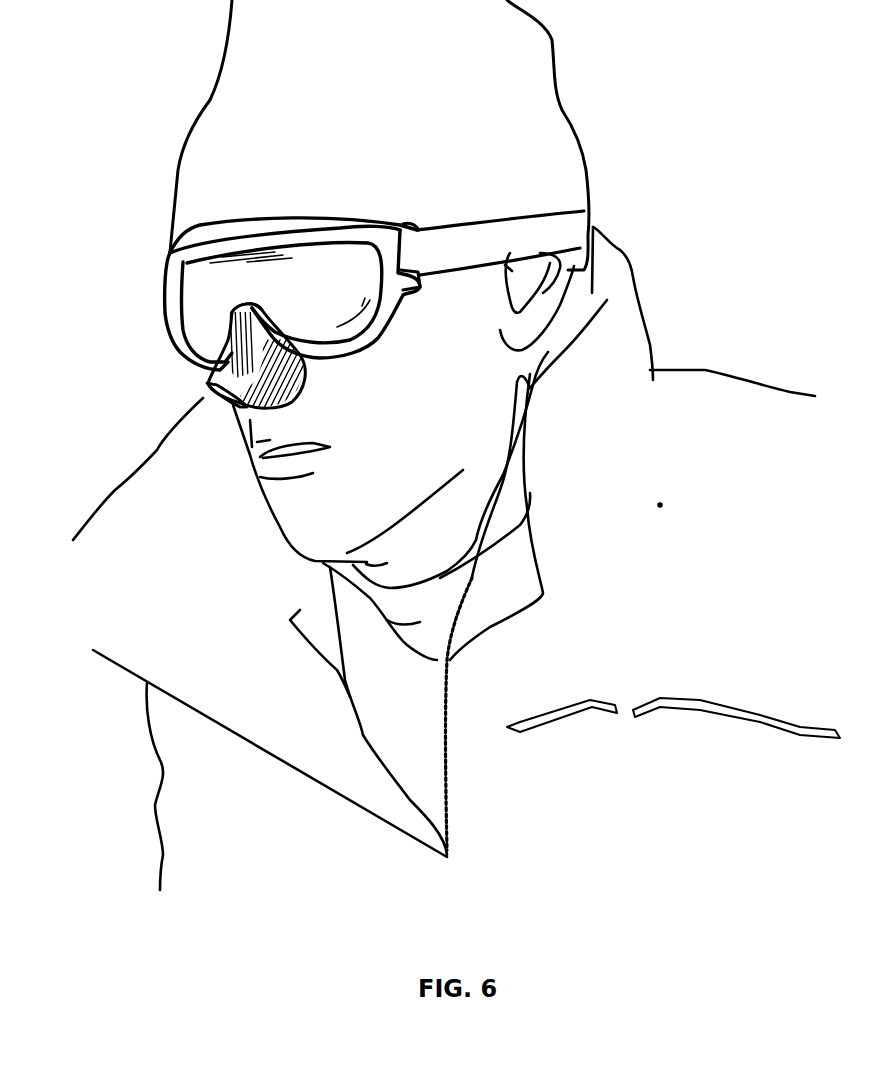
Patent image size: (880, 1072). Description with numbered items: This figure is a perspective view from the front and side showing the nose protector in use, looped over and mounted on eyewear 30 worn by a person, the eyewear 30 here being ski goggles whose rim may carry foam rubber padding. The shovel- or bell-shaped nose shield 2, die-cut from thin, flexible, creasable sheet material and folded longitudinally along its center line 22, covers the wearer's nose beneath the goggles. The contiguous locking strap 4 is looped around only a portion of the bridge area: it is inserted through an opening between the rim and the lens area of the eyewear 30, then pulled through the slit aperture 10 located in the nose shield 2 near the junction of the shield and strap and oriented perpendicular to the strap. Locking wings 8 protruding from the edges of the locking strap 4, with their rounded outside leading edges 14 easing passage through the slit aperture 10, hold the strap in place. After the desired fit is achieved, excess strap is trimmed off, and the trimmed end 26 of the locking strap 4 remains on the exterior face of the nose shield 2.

The nose shield 2 is at (300, 391).
The locking strap 4 is at (173, 252).
The locking wings 8 is at (252, 312).
The slit aperture 10 is at (212, 366).
The rounded outside leading edges 14 is at (232, 319).
The center line 22 is at (208, 384).
The trimmed end 26 is at (262, 322).
The eyewear 30 is at (333, 260).